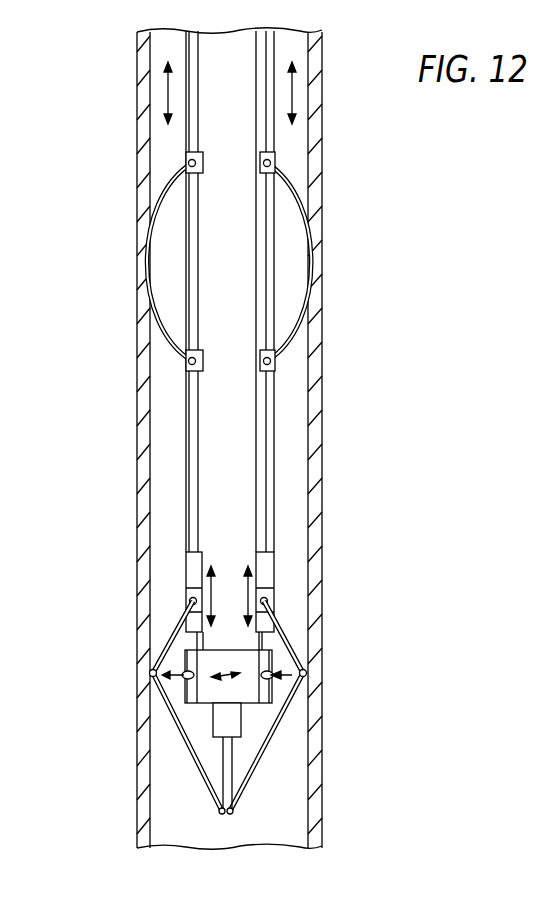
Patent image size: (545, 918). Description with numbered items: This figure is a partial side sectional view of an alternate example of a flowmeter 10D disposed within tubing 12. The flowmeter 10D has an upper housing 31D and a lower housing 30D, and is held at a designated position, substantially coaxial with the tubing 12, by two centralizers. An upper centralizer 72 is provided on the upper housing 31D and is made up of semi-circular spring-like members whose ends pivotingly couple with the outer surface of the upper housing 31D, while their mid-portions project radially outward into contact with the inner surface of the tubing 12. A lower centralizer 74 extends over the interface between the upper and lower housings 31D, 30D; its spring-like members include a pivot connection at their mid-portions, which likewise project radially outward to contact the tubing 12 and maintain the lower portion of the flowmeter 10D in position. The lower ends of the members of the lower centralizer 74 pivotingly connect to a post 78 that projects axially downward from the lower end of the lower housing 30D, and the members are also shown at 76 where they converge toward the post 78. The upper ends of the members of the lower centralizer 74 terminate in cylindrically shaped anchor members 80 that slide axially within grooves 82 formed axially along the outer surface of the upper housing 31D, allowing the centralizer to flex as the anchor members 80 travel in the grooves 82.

The tubing 12 is at (138, 165).
The upper centralizer 72 is at (297, 342).
The upper housing 31D is at (186, 396).
The flowmeter 10D is at (288, 489).
The grooves 82 is at (190, 563).
The anchor members 80 is at (276, 590).
The lower centralizer 74 is at (287, 731).
The lower arm 76 is at (258, 773).
The lower housing 30D is at (186, 690).
The post 78 is at (222, 750).